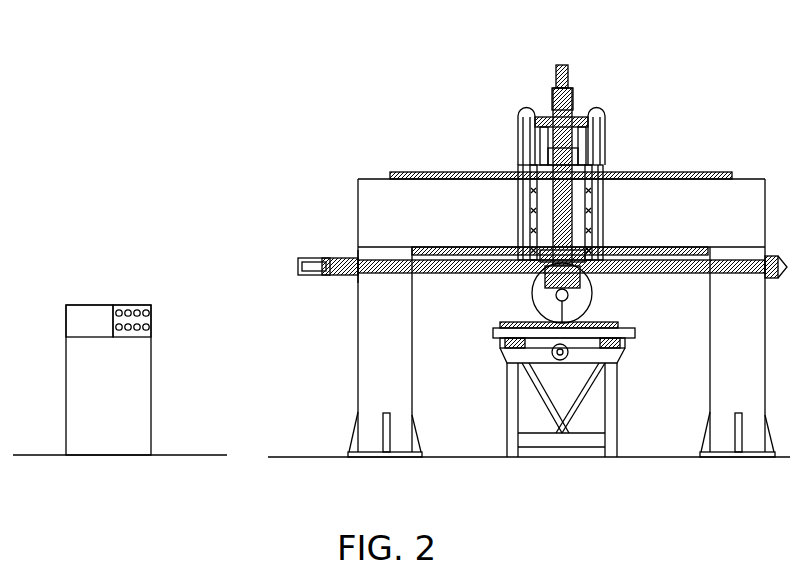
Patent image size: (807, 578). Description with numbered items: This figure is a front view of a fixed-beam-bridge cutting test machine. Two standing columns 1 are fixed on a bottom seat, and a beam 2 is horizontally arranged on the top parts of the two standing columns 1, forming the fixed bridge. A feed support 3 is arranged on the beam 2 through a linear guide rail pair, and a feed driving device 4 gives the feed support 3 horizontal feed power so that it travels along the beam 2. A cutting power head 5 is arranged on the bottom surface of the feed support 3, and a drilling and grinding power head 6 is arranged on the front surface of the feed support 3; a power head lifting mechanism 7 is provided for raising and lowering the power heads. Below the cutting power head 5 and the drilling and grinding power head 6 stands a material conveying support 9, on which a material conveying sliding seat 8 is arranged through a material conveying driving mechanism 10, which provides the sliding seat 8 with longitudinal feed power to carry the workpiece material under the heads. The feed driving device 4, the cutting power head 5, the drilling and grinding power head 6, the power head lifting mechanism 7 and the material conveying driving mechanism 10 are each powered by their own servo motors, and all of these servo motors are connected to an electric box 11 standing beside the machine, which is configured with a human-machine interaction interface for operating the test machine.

The standing column 1 is at (345, 328).
The beam 2 is at (373, 212).
The feed support 3 is at (522, 150).
The feed driving device 4 is at (330, 258).
The cutting power head 5 is at (593, 296).
The drilling and grinding power head 6 is at (572, 212).
The power head lifting mechanism 7 is at (552, 68).
The material conveying sliding seat 8 is at (495, 328).
The material conveying support 9 is at (612, 407).
The material conveying driving mechanism 10 is at (553, 357).
The electric box 11 is at (68, 311).